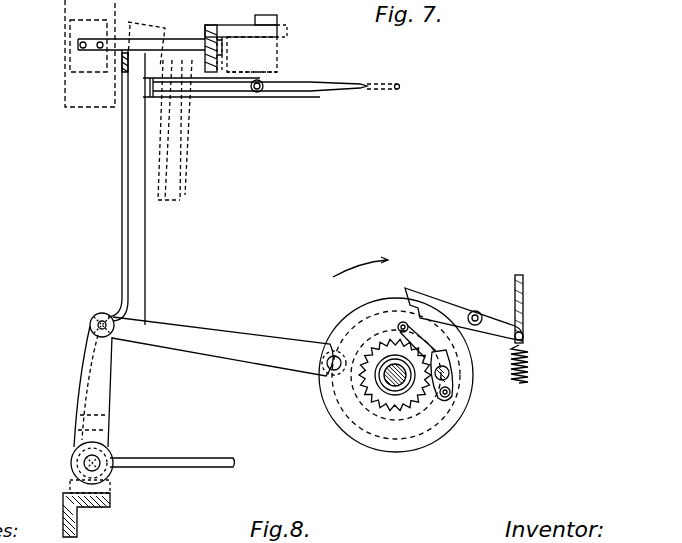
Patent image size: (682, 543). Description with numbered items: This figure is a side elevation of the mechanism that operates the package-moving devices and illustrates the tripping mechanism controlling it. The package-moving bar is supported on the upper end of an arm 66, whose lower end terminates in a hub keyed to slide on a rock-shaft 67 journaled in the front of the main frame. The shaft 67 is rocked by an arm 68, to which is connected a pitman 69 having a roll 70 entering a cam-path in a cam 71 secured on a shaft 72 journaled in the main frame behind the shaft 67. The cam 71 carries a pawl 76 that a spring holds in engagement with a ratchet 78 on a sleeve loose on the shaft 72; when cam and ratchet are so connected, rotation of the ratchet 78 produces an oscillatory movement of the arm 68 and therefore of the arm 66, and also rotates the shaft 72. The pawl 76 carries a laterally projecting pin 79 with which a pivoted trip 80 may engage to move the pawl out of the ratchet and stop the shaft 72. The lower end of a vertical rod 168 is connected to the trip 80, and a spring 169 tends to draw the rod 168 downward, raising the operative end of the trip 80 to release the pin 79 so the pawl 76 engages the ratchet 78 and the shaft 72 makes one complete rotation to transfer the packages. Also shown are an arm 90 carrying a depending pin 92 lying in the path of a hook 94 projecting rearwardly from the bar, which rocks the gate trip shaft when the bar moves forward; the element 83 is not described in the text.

The arm 66 is at (138, 233).
The rock-shaft 67 is at (98, 466).
The arm 68 is at (103, 388).
The pitman 69 is at (284, 373).
The roll 70 is at (331, 333).
The cam 71 is at (421, 350).
The shaft 72 is at (390, 387).
The pawl 76 is at (448, 362).
The ratchet 78 is at (402, 348).
The pin 79 is at (447, 397).
The pivoted trip 80 is at (448, 305).
The arm 83 is at (205, 462).
The arm 90 is at (218, 27).
The pin 92 is at (205, 50).
The hook 94 is at (217, 47).
The vertical rod 168 is at (525, 283).
The spring 169 is at (530, 366).